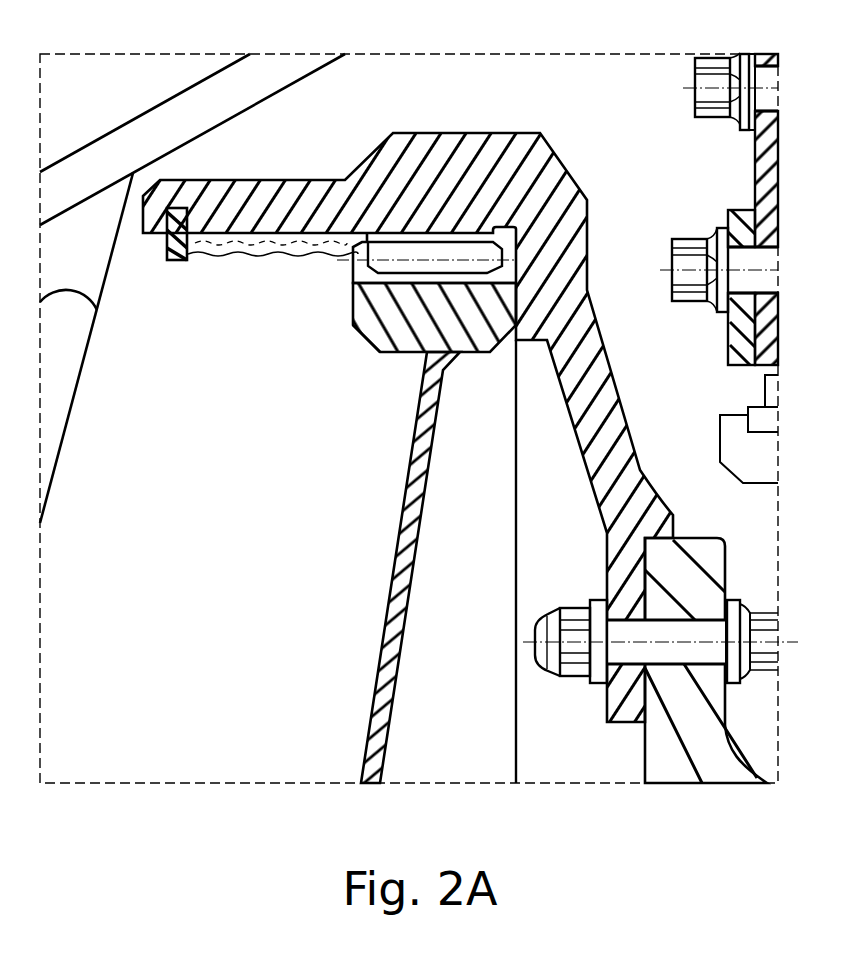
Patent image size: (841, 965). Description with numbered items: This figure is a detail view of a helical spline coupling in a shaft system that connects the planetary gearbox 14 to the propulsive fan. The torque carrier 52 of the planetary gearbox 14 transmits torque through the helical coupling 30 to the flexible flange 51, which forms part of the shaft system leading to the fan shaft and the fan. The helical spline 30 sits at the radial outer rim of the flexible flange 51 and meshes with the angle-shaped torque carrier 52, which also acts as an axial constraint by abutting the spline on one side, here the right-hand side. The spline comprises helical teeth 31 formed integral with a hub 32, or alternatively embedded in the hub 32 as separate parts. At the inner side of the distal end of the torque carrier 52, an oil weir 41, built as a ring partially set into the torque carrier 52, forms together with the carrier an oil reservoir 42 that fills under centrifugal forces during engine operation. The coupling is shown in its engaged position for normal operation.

The planetary gearbox 14 is at (660, 755).
The helical spline 30 is at (349, 328).
The helical teeth 31 is at (365, 275).
The hub 32 is at (383, 328).
The oil weir 41 is at (178, 261).
The oil reservoir 42 is at (230, 243).
The flexible flange 51 is at (405, 558).
The torque carrier 52 is at (499, 148).